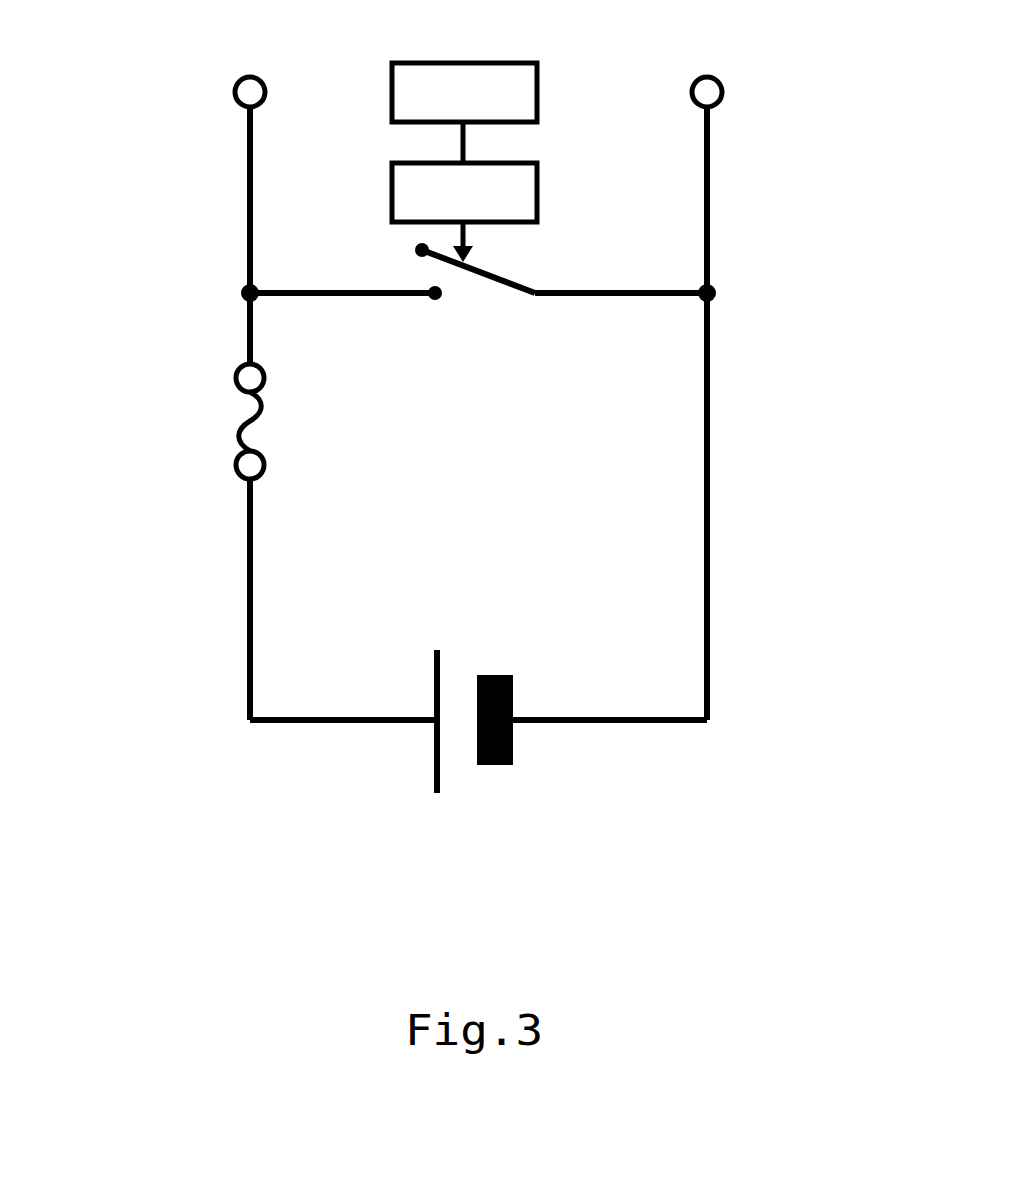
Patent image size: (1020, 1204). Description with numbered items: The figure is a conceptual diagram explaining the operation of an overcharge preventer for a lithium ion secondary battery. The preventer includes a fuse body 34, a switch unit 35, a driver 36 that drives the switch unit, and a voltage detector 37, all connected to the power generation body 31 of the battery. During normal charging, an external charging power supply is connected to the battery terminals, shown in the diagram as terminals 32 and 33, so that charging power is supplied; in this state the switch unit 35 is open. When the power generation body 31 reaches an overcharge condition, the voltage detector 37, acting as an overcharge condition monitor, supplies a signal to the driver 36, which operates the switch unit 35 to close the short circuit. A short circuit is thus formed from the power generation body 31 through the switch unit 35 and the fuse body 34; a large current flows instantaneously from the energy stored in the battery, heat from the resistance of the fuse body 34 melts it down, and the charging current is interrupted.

The power generation body 31 is at (463, 792).
The first terminal 32 is at (237, 95).
The second terminal 33 is at (722, 90).
The fuse body 34 is at (236, 422).
The switch unit 35 is at (475, 293).
The driver 36 is at (520, 193).
The voltage detector 37 is at (508, 93).